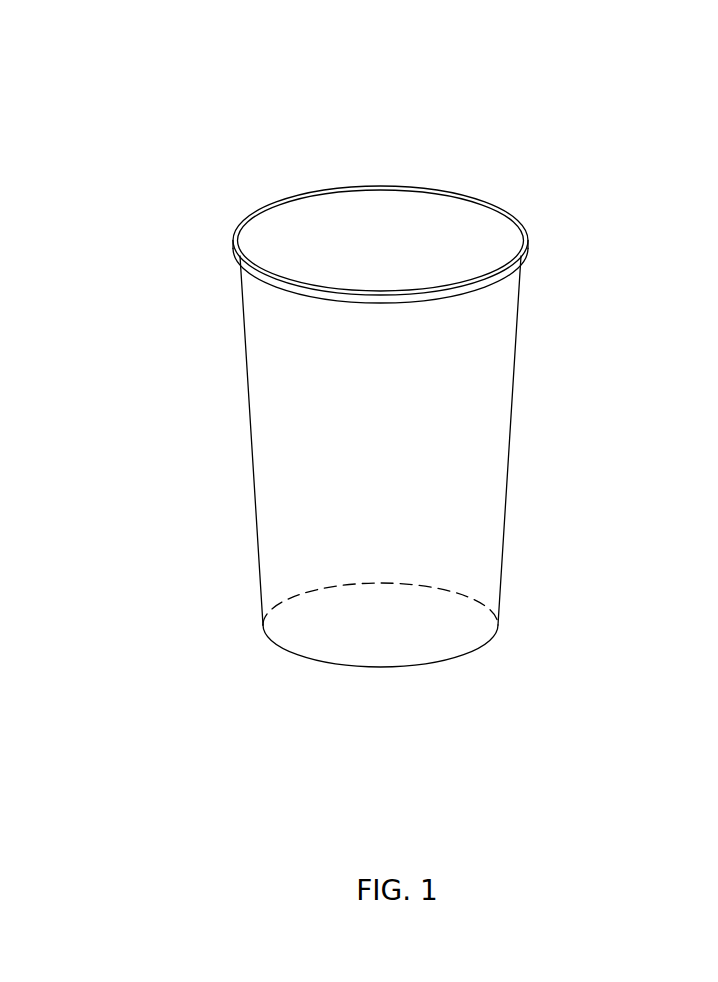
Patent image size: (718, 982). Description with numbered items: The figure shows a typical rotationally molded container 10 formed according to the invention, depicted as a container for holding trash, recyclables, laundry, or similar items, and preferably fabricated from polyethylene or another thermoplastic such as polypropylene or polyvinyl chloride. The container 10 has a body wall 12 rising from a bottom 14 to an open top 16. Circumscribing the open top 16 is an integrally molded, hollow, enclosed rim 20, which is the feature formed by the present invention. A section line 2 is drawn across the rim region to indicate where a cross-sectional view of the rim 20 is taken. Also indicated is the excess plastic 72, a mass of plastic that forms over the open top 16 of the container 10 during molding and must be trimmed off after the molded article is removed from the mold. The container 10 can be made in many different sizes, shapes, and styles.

The rotationally molded container 10 is at (270, 138).
The body wall 12 is at (510, 470).
The bottom 14 is at (437, 663).
The open top 16 is at (348, 233).
The enclosed rim 20 is at (285, 292).
The section line 2- 2 is at (372, 255).
The excess plastic 72 is at (717, 546).